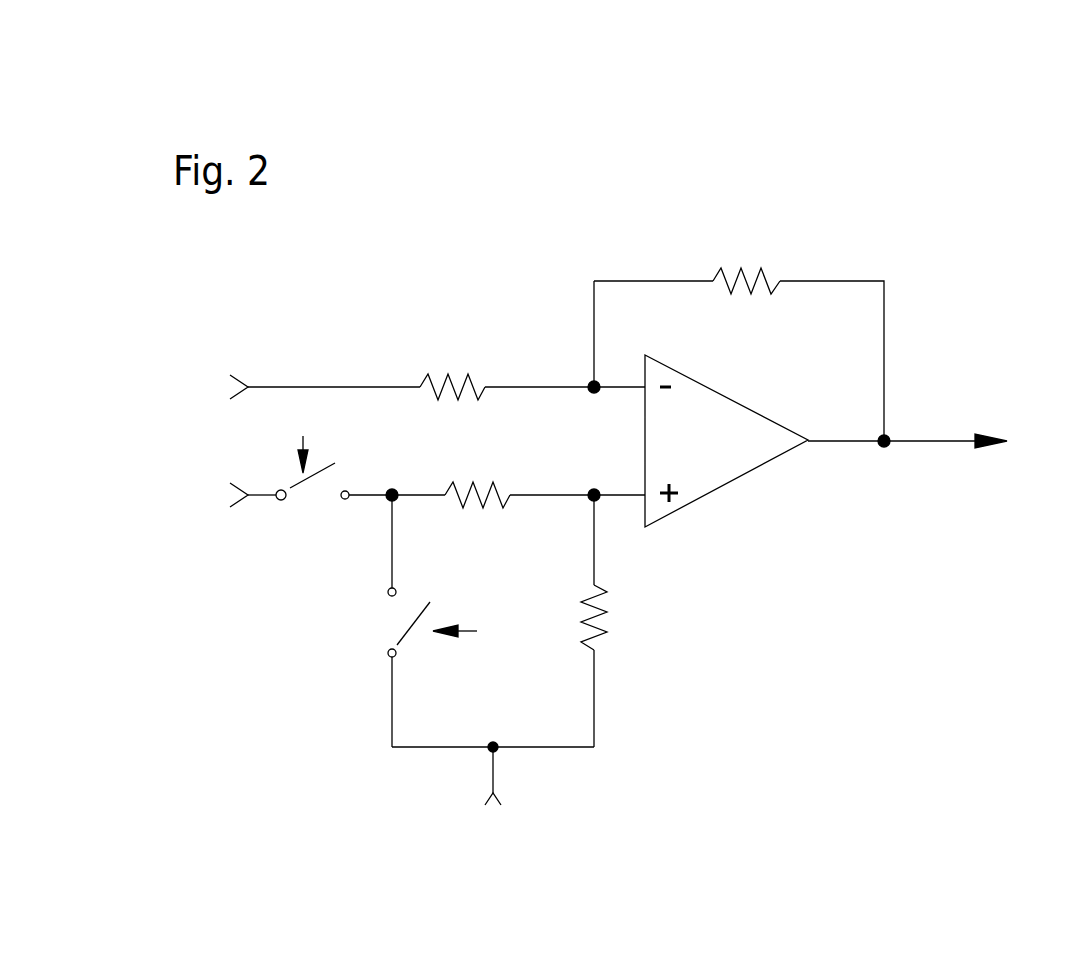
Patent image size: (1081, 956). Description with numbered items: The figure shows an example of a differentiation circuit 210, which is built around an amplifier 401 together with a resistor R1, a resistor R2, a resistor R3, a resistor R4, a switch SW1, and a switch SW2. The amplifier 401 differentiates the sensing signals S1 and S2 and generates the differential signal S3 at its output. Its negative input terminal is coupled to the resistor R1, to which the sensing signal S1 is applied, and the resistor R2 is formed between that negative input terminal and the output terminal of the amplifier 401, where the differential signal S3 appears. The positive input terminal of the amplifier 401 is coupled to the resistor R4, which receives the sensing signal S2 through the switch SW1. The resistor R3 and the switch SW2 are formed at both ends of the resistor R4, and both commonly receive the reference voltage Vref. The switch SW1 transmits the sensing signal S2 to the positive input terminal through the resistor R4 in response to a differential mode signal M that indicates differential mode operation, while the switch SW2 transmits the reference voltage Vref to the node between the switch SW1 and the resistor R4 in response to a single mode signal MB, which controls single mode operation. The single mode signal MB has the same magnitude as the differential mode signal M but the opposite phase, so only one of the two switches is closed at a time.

The differentiation circuit 210 is at (987, 113).
The amplifier 401 is at (727, 398).
The resistor R1 is at (452, 362).
The resistor R2 is at (746, 254).
The resistor R3 is at (619, 621).
The resistor R4 is at (477, 515).
The switch SW1 is at (312, 504).
The switch SW2 is at (366, 621).
The sensing signal S1 is at (298, 385).
The sensing signal S2 is at (226, 493).
The differential signal S3 is at (1016, 443).
The differential mode signal M is at (300, 437).
The single mode signal MB is at (482, 631).
The reference voltage Vref is at (498, 800).